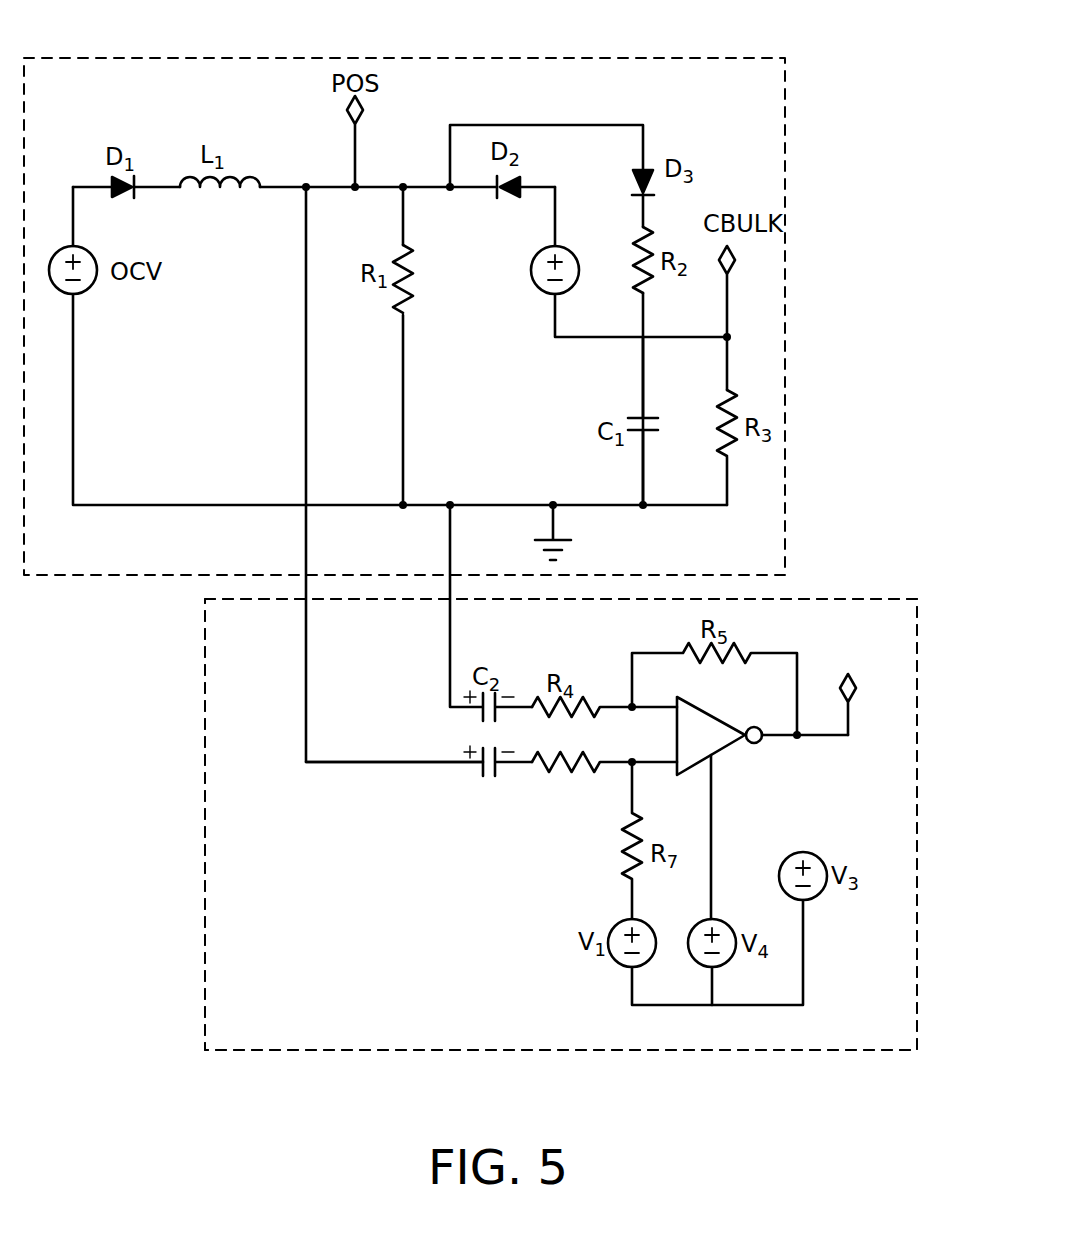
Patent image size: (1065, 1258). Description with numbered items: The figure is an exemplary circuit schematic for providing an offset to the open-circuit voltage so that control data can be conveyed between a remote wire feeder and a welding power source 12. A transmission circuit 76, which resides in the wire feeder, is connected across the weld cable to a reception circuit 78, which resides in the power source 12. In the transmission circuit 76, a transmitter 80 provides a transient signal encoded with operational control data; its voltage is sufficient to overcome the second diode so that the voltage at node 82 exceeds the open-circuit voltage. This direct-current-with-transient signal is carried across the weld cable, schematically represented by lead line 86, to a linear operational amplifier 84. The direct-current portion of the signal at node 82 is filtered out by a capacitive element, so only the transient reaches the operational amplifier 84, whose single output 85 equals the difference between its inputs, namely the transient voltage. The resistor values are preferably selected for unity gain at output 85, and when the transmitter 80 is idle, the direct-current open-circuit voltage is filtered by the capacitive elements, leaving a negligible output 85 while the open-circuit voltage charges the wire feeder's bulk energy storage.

The power source 12 is at (205, 820).
The transmission circuit 76 is at (99, 105).
The reception circuit 78 is at (490, 1000).
The transmitter 80 is at (535, 290).
The node 82 is at (305, 184).
The linear operational amplifier 84 is at (742, 766).
The output 85 is at (853, 700).
The lead line 86 is at (300, 737).